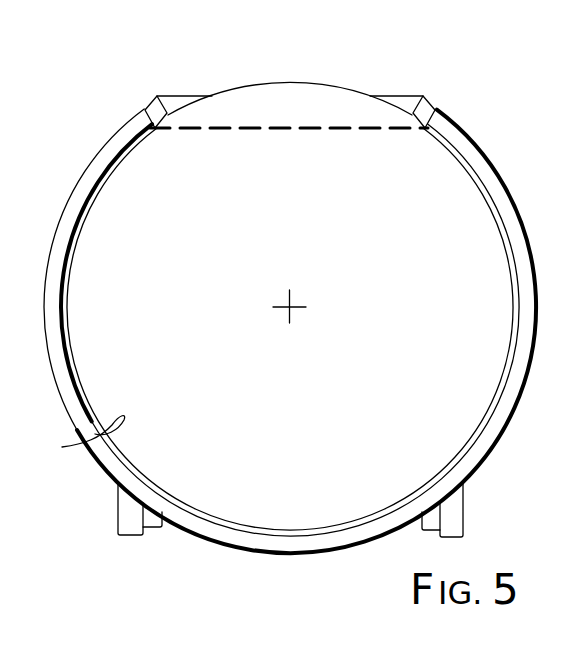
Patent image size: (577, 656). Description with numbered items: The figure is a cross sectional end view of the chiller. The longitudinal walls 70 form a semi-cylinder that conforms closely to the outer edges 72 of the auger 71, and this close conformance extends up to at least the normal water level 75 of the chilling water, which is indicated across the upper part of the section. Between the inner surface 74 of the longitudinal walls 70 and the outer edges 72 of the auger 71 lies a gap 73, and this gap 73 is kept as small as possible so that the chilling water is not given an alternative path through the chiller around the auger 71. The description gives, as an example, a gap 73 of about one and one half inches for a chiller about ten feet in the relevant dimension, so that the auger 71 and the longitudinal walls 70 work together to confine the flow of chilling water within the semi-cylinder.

The longitudinal walls 70 is at (490, 182).
The auger 71 is at (237, 102).
The outer edges of the auger 72 is at (257, 82).
The gap 73 is at (463, 162).
The inner surface of the longitudinal walls 74 is at (76, 445).
The normal water level 75 is at (352, 128).